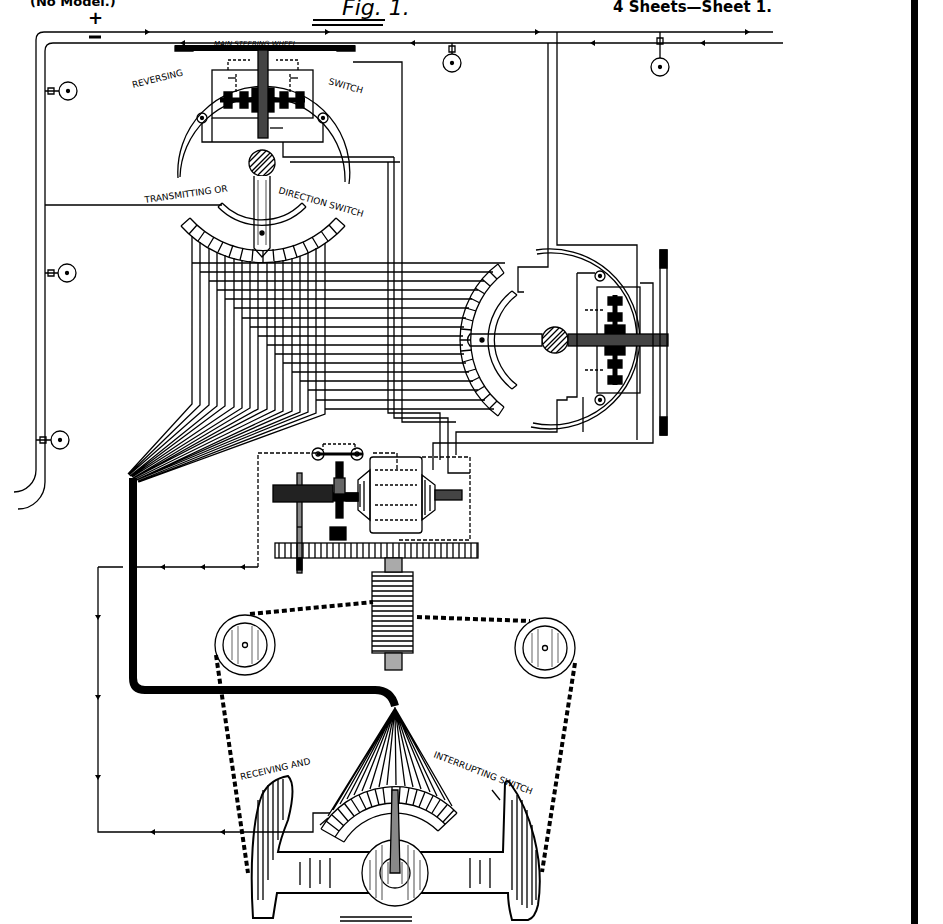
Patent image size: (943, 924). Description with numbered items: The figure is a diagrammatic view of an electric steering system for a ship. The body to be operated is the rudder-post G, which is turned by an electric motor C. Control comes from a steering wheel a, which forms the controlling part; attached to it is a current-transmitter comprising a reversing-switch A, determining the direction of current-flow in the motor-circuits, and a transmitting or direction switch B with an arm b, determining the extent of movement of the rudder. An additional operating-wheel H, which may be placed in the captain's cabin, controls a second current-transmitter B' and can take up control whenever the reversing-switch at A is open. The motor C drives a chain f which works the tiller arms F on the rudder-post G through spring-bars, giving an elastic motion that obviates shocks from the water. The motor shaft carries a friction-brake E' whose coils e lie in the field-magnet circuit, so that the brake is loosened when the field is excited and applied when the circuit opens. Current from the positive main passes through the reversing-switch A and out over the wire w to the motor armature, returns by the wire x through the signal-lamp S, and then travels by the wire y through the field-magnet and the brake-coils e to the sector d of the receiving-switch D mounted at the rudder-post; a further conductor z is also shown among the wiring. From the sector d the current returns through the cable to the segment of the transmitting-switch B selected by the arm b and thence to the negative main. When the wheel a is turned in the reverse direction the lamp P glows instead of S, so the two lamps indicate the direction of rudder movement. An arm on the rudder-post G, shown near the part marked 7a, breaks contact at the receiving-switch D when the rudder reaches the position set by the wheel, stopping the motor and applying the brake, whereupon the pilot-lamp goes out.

The reversing-switch A is at (257, 115).
The signal-lamp S is at (196, 124).
The lamp P is at (327, 125).
The steering-wheel a is at (356, 50).
The arm b is at (272, 186).
The transmitting or direction switch B is at (263, 240).
The supplemental direction switch B' is at (581, 339).
The additional operating-wheel H is at (668, 330).
The wire y is at (404, 128).
The wire w is at (396, 216).
The wire x is at (390, 246).
The wire z is at (258, 494).
The electric motor C is at (364, 498).
The brake E' is at (340, 456).
The coil e is at (312, 453).
The chain f is at (222, 742).
The tiller arm F is at (462, 885).
The rudder-post G is at (378, 885).
The rudder stock 7a is at (387, 915).
The receiving-switch D is at (399, 814).
The sector d is at (462, 810).